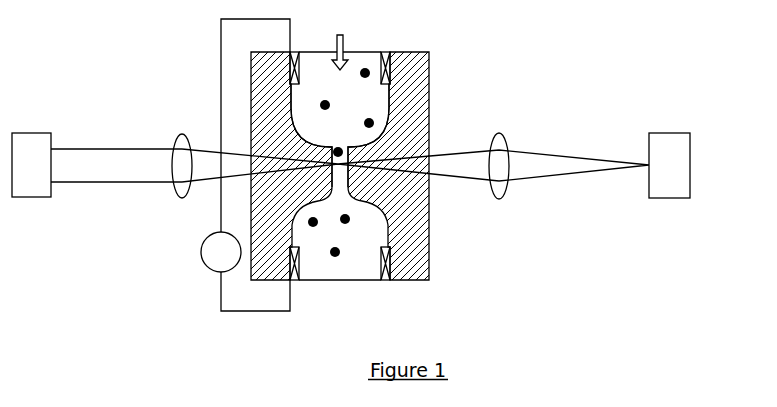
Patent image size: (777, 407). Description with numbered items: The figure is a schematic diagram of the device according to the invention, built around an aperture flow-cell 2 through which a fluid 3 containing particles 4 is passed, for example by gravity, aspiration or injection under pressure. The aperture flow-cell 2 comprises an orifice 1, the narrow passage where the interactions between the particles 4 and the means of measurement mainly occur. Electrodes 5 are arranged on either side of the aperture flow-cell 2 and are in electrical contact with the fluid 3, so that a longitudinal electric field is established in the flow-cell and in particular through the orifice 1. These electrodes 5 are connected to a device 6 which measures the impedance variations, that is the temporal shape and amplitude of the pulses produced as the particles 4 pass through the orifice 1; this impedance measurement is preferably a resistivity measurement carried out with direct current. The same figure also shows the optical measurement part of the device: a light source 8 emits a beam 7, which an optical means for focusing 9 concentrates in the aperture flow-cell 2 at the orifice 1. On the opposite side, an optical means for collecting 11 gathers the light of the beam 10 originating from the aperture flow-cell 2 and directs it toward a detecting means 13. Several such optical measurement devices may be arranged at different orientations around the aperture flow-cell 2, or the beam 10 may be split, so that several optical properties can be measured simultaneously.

The orifice 1 is at (352, 157).
The aperture flow-cell 2 is at (421, 70).
The fluid 3 is at (343, 47).
The particles 4 is at (320, 105).
The electrodes 5 is at (403, 265).
The device which measures the impedance variations 6 is at (201, 254).
The beam 7 is at (236, 152).
The light source 8 is at (42, 133).
The optical means for focusing 9 is at (181, 134).
The beam originating from the aperture flow-cell 10 is at (455, 151).
The optical means for collecting 11 is at (500, 134).
The detecting means 13 is at (673, 133).